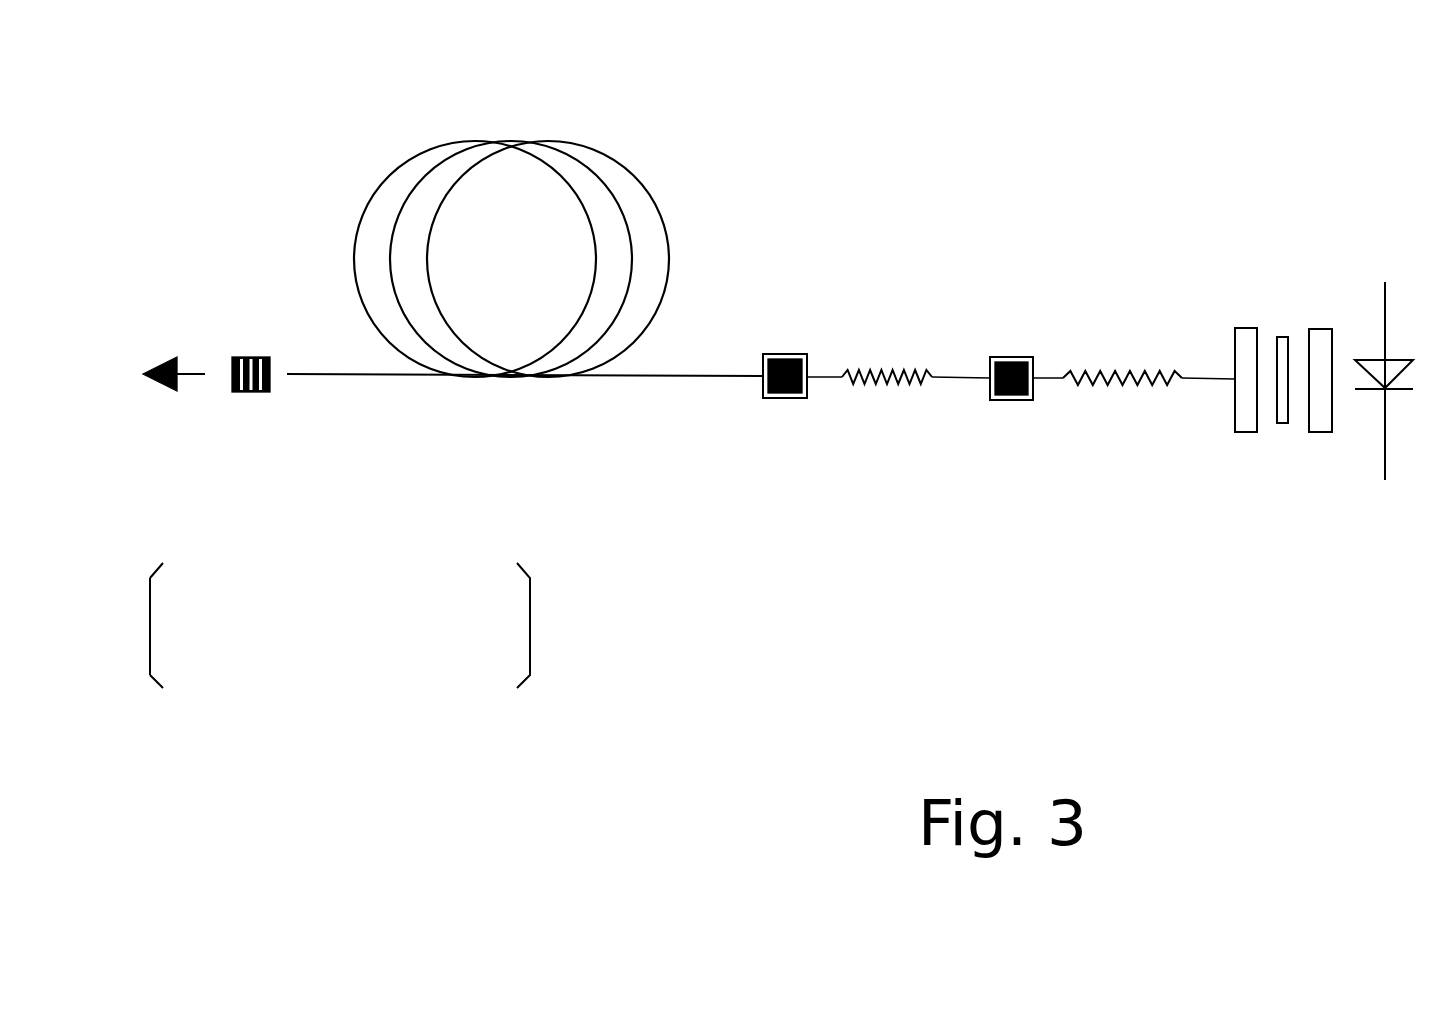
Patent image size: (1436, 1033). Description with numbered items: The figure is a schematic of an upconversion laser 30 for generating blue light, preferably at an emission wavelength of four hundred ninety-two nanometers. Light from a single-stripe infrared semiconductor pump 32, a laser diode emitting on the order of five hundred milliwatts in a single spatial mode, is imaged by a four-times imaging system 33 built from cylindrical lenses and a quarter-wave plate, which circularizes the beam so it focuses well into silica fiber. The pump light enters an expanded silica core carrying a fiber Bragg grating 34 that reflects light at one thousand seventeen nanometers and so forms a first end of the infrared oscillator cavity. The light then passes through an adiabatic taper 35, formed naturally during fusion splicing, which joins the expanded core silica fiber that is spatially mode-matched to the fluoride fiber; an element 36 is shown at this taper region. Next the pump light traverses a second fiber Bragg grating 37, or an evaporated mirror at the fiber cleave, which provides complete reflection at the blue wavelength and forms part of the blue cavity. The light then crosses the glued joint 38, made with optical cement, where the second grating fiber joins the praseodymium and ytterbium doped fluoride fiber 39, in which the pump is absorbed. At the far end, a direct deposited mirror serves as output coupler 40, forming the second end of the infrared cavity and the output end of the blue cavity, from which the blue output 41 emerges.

The upconversion laser 30 is at (705, 666).
The single-stripe infrared semiconductor pump 32 is at (1374, 513).
The 4× imaging system 33 is at (1289, 458).
The fiber Bragg grating 34 is at (1076, 336).
The adiabatic taper 35 is at (988, 362).
The fiber splice 36 is at (978, 414).
The second fiber Bragg grating 37 is at (895, 421).
The glued joint 38 is at (763, 387).
The fluoride fiber 39 is at (541, 117).
The output coupler 40 is at (264, 436).
The blue output beam 41 is at (156, 360).